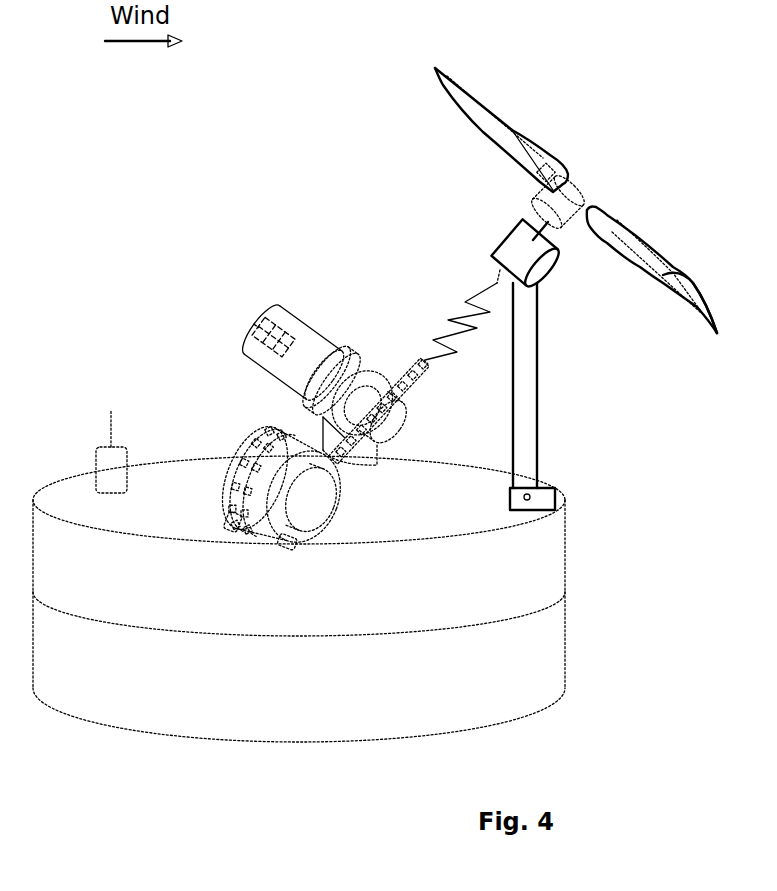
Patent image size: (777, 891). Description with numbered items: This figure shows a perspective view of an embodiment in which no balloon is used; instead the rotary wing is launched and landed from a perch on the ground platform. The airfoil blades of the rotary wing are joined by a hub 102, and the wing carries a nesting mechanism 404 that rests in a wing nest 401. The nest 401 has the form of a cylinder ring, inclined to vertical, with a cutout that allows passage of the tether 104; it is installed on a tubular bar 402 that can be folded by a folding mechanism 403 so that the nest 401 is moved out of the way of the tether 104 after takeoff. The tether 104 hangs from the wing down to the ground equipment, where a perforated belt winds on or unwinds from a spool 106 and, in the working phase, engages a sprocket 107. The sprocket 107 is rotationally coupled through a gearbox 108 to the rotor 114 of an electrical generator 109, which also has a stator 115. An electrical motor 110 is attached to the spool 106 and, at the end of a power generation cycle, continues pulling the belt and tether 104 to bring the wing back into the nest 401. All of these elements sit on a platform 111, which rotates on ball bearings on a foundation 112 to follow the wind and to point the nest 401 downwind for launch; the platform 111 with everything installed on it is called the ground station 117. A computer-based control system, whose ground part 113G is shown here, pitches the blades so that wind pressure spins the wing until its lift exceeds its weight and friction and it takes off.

The hub 102 is at (597, 207).
The tether 104 is at (470, 297).
The spool 106 is at (257, 440).
The sprocket 107 is at (395, 425).
The gearbox 108 is at (353, 367).
The electrical generator 109 is at (300, 325).
The electrical motor 110 is at (337, 505).
The platform 111 is at (552, 535).
The foundation 112 is at (557, 613).
The ground part of control system 113G is at (117, 477).
The rotor 114 is at (270, 327).
The stator 115 is at (248, 318).
The ground station 117 is at (160, 245).
The wing nest 401 is at (537, 260).
The tubular bar 402 is at (528, 433).
The folding mechanism 403 is at (545, 495).
The nesting mechanism 404 is at (540, 203).